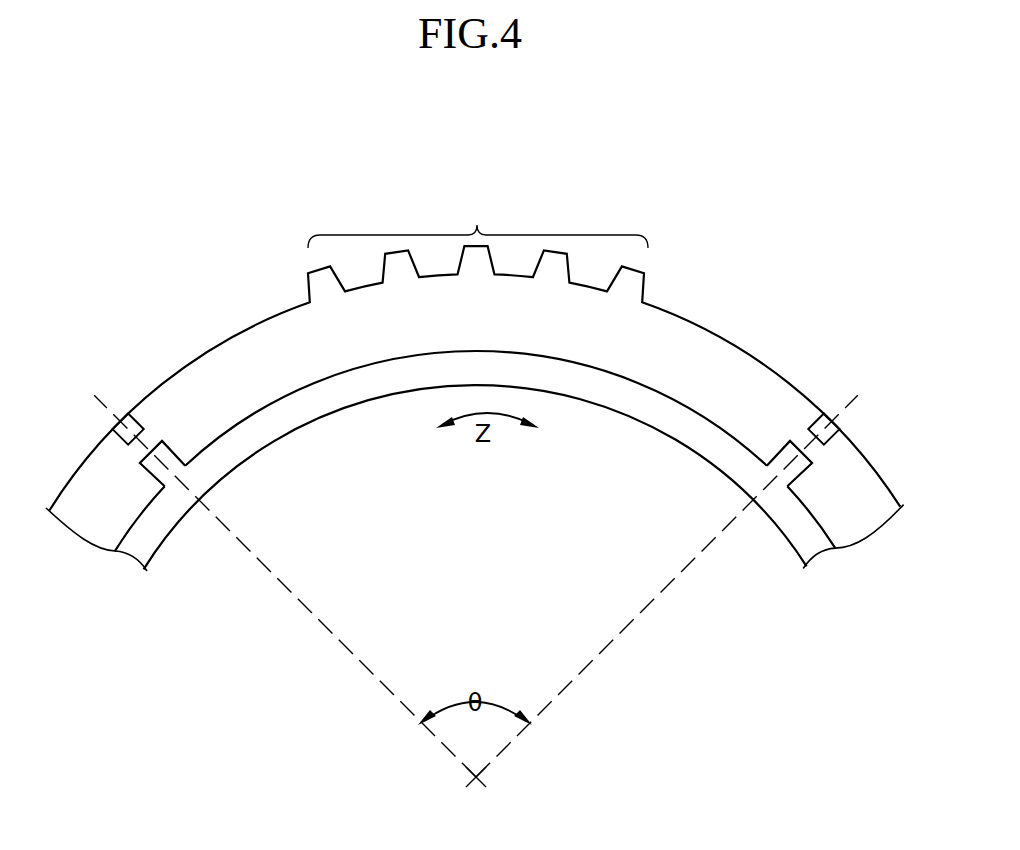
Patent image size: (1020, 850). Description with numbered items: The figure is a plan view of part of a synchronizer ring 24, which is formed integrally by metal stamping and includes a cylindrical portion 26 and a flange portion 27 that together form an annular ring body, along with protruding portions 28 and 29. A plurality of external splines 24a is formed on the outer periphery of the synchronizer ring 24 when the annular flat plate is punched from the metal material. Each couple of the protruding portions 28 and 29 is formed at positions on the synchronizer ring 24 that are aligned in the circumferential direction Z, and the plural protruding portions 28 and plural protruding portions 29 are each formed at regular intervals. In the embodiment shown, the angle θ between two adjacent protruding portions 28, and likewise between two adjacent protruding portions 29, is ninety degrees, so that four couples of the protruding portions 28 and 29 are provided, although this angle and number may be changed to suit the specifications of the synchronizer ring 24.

The synchronizer ring 24 is at (671, 313).
The external splines 24a is at (478, 222).
The cylindrical portion 26 is at (643, 407).
The flange portion 27 is at (230, 350).
The protruding portion 28 is at (163, 447).
The protruding portion 29 is at (117, 443).